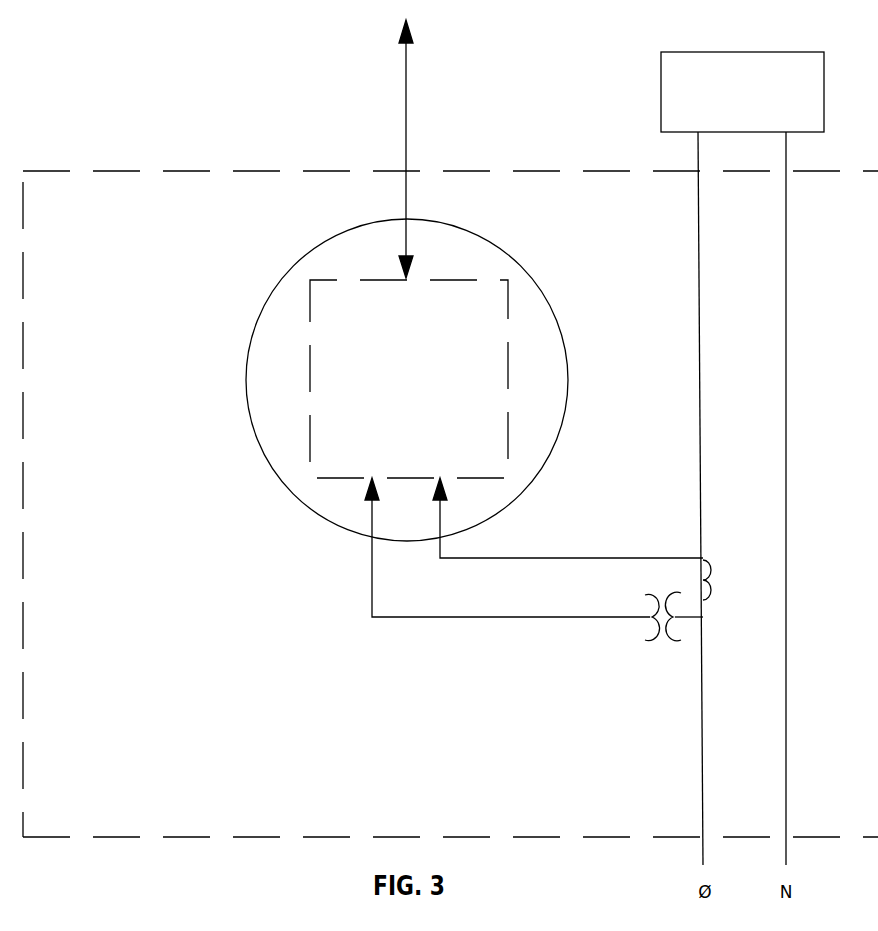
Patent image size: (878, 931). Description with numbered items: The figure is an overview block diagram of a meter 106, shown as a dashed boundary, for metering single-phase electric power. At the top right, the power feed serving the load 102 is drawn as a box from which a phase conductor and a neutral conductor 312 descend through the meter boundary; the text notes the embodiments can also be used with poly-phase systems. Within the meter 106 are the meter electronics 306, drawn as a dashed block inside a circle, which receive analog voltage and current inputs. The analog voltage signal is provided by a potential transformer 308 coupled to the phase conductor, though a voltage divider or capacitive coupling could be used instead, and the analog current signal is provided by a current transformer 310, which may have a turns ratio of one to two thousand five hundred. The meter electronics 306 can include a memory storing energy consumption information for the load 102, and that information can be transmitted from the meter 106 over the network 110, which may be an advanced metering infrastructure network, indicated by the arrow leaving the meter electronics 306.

The load 102 is at (742, 92).
The meter 106 is at (450, 485).
The network 110 is at (348, 149).
The meter electronics 306 is at (346, 379).
The potential transformer 308 is at (534, 559).
The current transformer 310 is at (572, 539).
The neutral conductor 312 is at (828, 498).